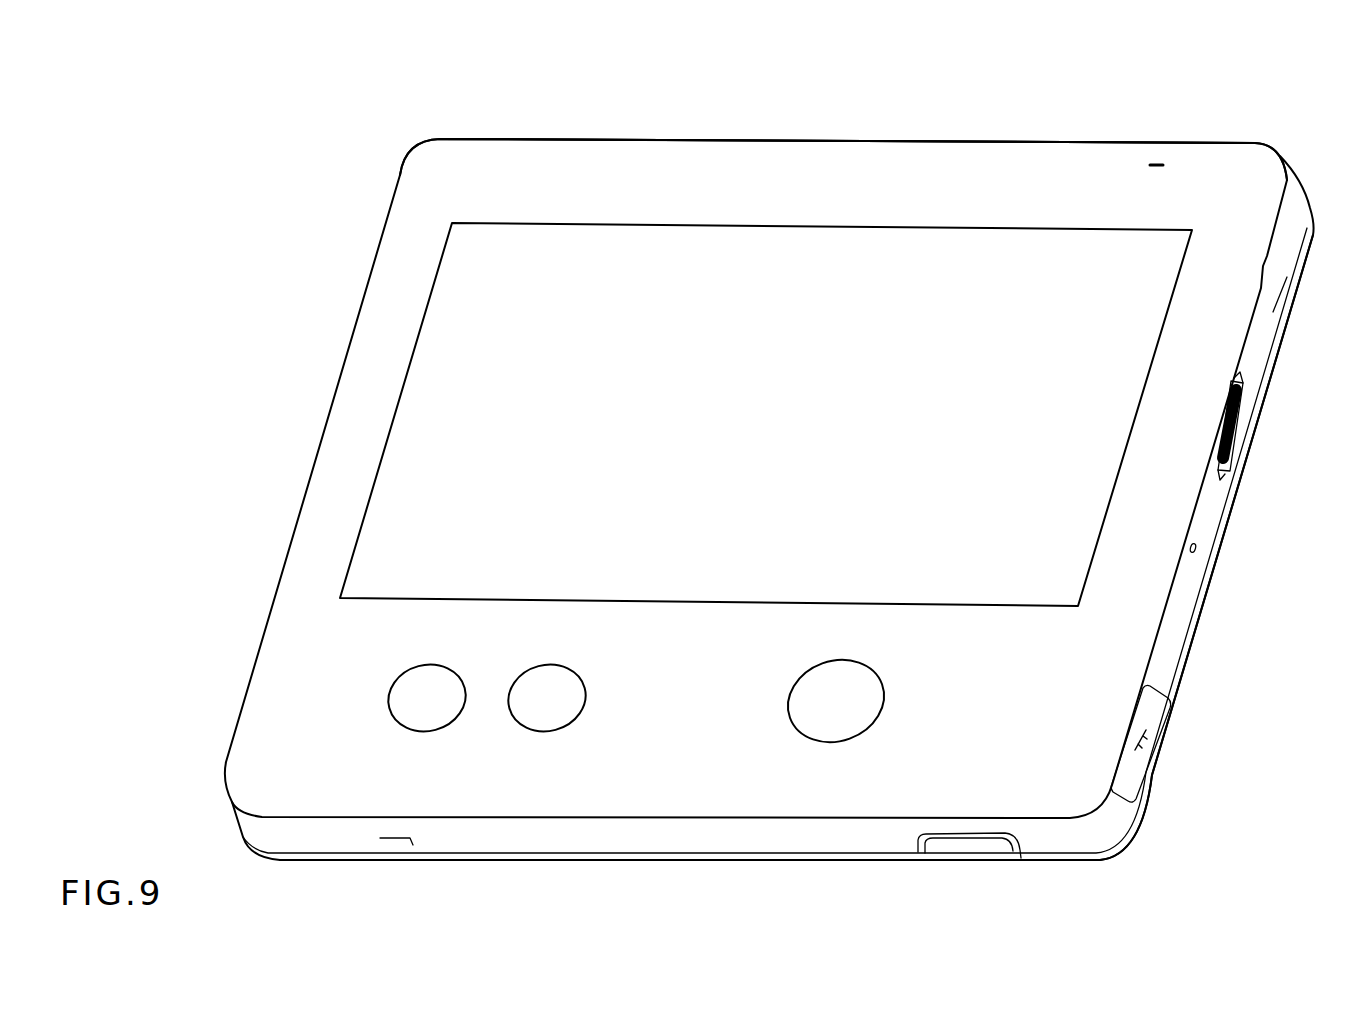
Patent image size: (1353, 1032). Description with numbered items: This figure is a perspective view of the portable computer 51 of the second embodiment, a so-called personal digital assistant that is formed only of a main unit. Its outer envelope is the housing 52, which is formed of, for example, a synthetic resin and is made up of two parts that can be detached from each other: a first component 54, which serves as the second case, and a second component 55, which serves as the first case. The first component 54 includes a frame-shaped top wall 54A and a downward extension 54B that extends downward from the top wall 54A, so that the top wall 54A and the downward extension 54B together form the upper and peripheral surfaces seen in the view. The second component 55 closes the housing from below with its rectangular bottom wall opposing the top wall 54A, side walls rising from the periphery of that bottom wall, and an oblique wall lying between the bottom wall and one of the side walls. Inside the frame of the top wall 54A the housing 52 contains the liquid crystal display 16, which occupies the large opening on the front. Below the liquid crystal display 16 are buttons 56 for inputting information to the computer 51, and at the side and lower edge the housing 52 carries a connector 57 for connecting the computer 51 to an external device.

The portable computer 51 is at (839, 90).
The housing 52 is at (723, 140).
The first component 54 is at (495, 137).
The top wall 54A is at (615, 163).
The downward extension 54B is at (520, 838).
The second component 55 is at (1106, 852).
The buttons 56 is at (415, 718).
The connector 57 is at (1242, 423).
The liquid crystal display 16 is at (998, 260).